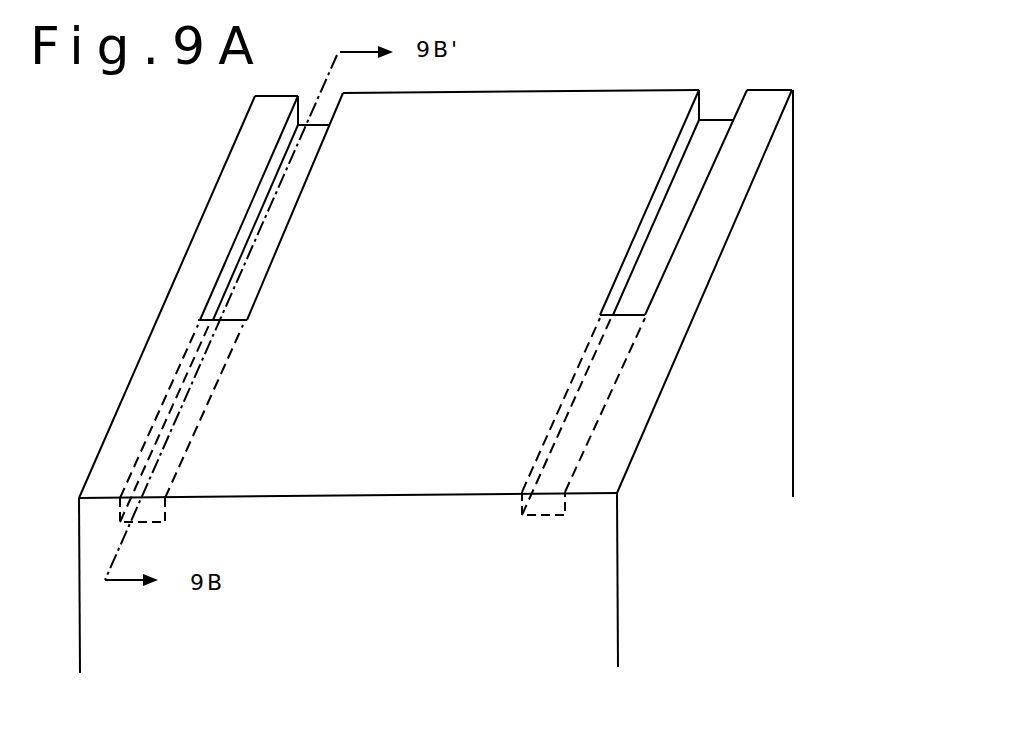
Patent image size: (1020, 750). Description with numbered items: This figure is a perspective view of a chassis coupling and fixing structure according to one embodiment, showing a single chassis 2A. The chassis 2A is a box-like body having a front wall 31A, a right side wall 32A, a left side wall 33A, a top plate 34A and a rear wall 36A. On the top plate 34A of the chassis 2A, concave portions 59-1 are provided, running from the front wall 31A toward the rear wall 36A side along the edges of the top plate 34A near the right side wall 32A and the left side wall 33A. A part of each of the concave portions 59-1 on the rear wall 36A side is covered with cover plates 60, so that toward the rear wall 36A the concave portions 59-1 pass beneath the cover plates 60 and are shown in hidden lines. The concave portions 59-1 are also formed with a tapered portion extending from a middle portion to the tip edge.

The chassis 2A is at (712, 590).
The front wall 31A is at (632, 92).
The right side wall 32A is at (80, 633).
The left side wall 33A is at (772, 388).
The top plate 34A is at (498, 120).
The rear wall 36A is at (582, 628).
The concave portion 59-1 is at (670, 238).
The cover plate 60 is at (578, 438).